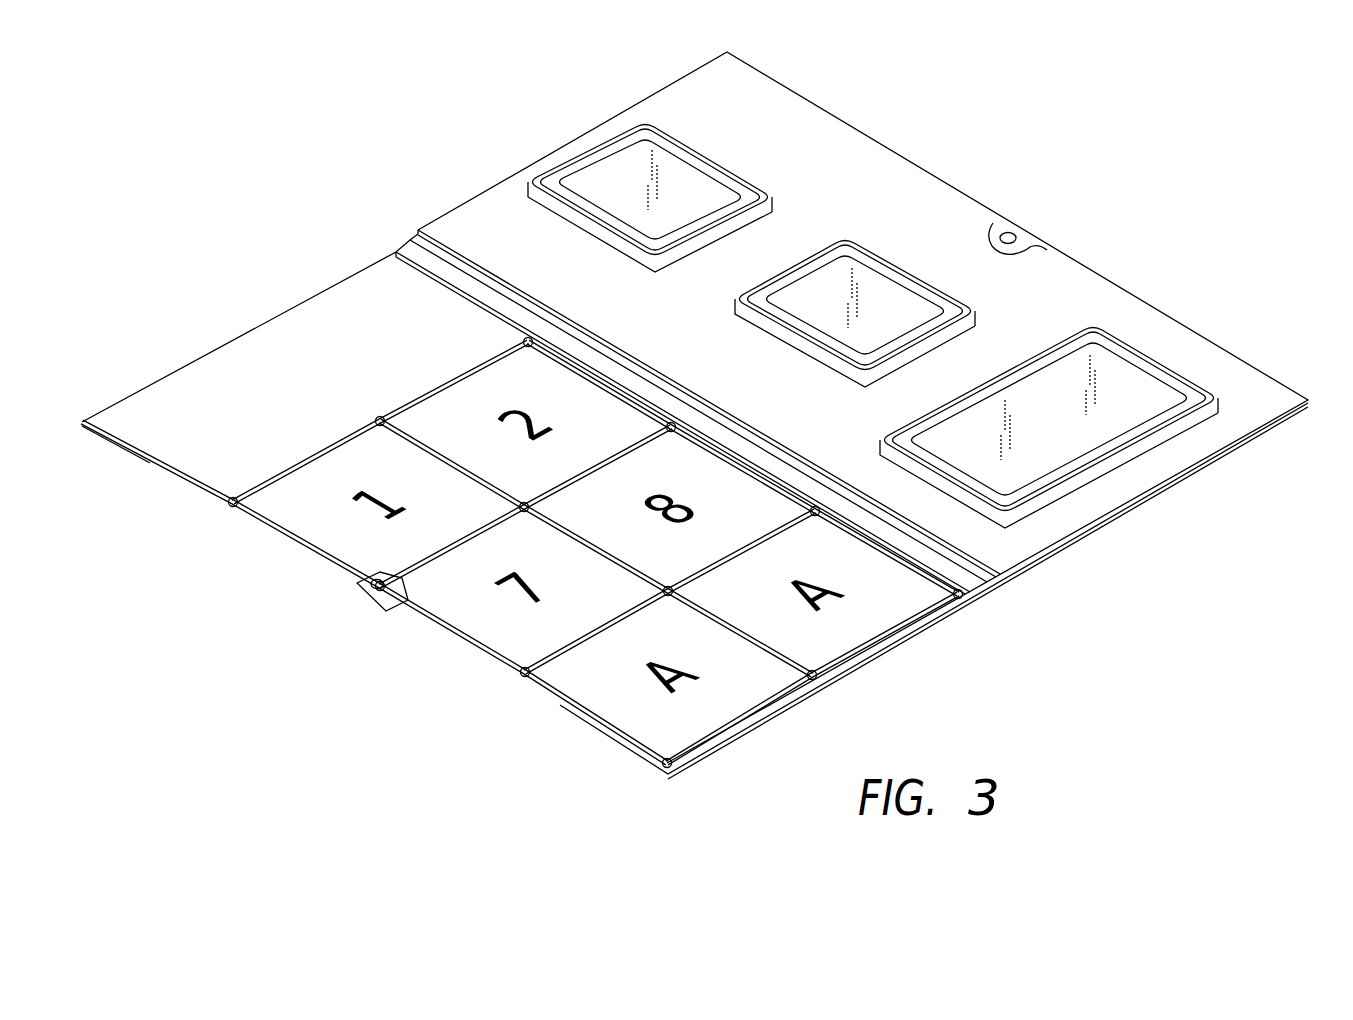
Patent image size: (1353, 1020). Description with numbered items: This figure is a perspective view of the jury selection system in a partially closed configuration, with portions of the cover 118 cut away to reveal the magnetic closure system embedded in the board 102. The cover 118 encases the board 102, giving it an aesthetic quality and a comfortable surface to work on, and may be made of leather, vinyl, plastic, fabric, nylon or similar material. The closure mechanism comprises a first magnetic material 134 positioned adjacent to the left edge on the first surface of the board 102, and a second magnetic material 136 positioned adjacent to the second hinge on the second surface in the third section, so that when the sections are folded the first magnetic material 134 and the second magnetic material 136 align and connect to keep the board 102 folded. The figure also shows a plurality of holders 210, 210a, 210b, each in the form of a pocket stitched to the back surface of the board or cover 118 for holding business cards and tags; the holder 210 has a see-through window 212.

The board 102 is at (388, 601).
The cover 118 is at (358, 564).
The first magnetic material 134 is at (381, 581).
The second magnetic material 136 is at (1010, 234).
The holder 210 is at (1101, 406).
The holder 210a is at (917, 277).
The holder 210b is at (715, 158).
The see-through window 212 is at (1178, 386).